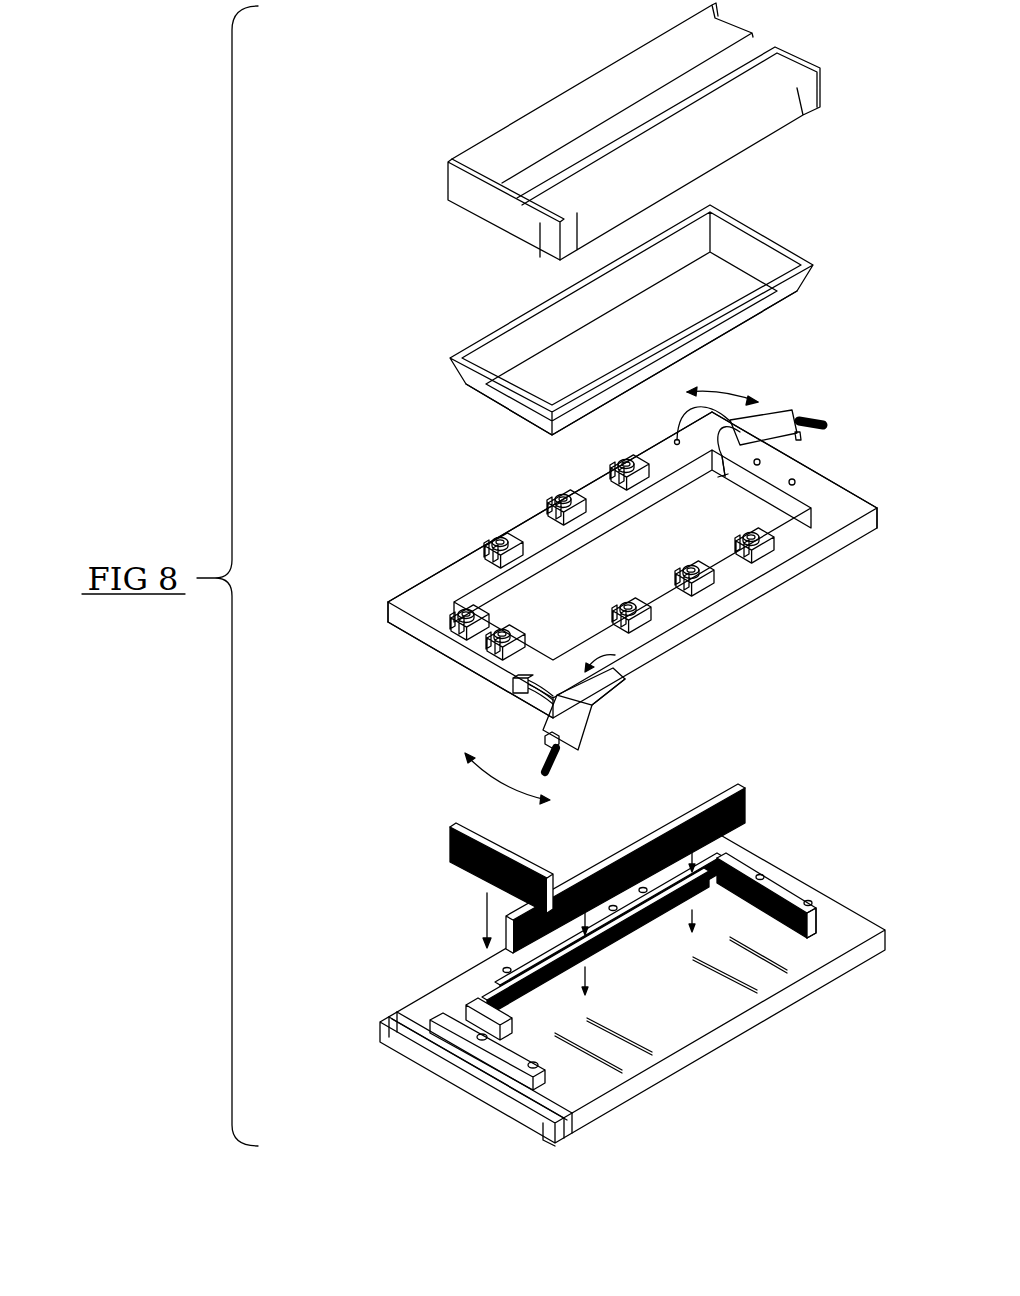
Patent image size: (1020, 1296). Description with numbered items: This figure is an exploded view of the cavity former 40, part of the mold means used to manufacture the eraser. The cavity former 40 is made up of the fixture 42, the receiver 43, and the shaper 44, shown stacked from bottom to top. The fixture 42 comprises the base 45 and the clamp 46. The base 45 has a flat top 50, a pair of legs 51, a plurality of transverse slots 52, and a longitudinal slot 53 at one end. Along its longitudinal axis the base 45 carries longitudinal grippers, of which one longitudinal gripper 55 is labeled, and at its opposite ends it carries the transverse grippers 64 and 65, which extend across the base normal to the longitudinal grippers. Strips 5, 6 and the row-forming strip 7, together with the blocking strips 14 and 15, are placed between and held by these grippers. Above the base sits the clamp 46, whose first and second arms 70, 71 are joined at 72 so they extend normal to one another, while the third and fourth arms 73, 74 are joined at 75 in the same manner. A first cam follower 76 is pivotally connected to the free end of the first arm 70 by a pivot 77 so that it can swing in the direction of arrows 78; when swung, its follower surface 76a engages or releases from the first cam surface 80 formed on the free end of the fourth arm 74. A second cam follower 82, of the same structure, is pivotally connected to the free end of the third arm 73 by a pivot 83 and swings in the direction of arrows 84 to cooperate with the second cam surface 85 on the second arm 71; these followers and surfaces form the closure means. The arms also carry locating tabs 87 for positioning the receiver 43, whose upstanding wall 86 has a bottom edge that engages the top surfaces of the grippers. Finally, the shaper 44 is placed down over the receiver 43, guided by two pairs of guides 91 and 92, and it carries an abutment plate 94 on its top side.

The cavity former 40 is at (148, 576).
The fixture 42 is at (430, 738).
The receiver 43 is at (447, 343).
The shaper 44 is at (490, 103).
The base 45 is at (760, 853).
The clamp 46 is at (851, 562).
The guides 91 is at (820, 98).
The guides 92 is at (750, 152).
The abutment plate 94 is at (668, 95).
The upstanding wall 86 is at (483, 390).
The first arm 70 is at (737, 577).
The second arm 71 is at (795, 470).
The joint of first and second arms 72 is at (853, 507).
The third arm 73 is at (530, 528).
The fourth arm 74 is at (467, 660).
The joint of third and fourth arms 75 is at (407, 600).
The first cam follower 76 is at (583, 740).
The follower surface 76a is at (597, 698).
The pivot 77 is at (613, 668).
The arrows 78 is at (490, 783).
The first cam surface 80 is at (528, 695).
The second cam follower 82 is at (783, 415).
The pivot 83 is at (725, 475).
The arrows 84 is at (727, 392).
The second cam surface 85 is at (700, 410).
The locating tabs 87 is at (490, 553).
The strip 5 is at (477, 988).
The strip 6 is at (503, 980).
The row-forming strip 7 is at (647, 843).
The blocking strip 14 is at (477, 877).
The blocking strip 15 is at (776, 887).
The flat top 50 is at (545, 1102).
The legs 51 is at (385, 1030).
The transverse slots 52 is at (757, 992).
The longitudinal slot 53 is at (507, 1082).
The longitudinal gripper 55 is at (472, 1008).
The transverse gripper 64 is at (822, 933).
The transverse gripper 65 is at (440, 1040).